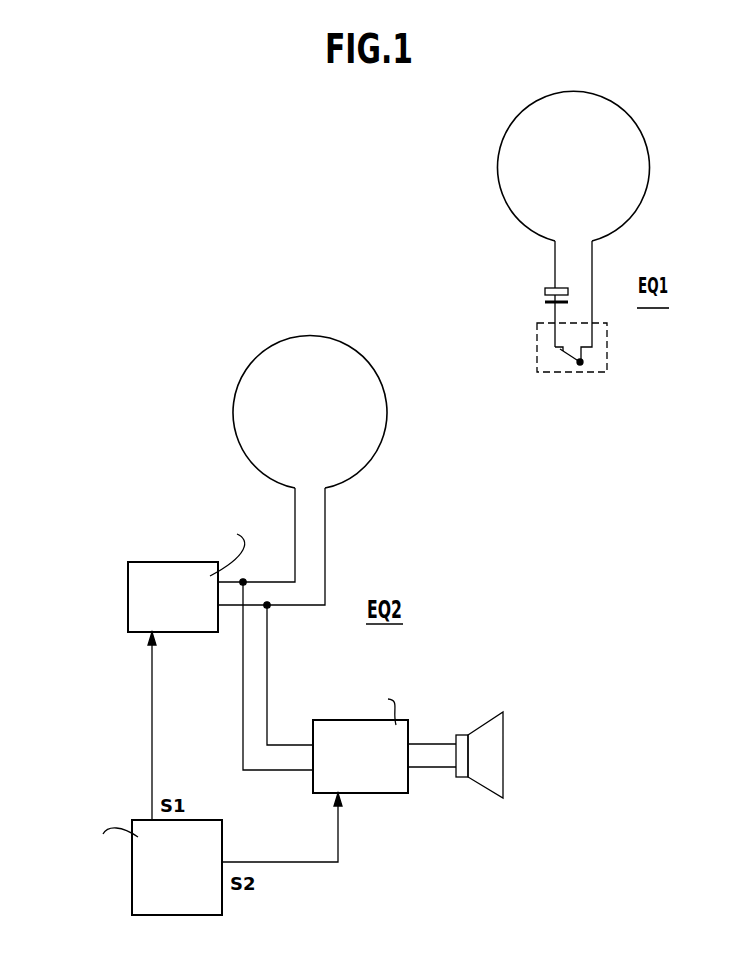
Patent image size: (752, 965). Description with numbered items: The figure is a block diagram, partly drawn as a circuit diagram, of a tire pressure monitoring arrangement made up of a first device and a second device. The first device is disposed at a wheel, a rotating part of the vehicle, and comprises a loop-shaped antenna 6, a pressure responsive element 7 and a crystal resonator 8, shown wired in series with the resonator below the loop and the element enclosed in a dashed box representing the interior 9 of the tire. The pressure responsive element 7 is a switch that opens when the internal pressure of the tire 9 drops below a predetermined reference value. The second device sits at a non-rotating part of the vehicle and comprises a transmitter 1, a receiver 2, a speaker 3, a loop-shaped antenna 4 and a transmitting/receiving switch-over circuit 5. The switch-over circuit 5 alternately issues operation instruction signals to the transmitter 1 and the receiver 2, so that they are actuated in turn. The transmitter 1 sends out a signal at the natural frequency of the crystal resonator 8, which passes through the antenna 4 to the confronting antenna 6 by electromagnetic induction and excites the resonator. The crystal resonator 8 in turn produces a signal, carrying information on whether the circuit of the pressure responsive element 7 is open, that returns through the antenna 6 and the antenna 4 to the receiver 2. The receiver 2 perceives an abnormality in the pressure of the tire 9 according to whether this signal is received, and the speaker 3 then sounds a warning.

The transmitter 1 is at (190, 620).
The receiver 2 is at (380, 780).
The speaker 3 is at (500, 762).
The antenna 4 is at (383, 402).
The transmitting/receiving switch-over circuit 5 is at (182, 905).
The antenna 6 is at (650, 176).
The pressure responsive element 7 is at (579, 366).
The crystal resonator 8 is at (545, 294).
The interior of a tire 9 is at (607, 353).